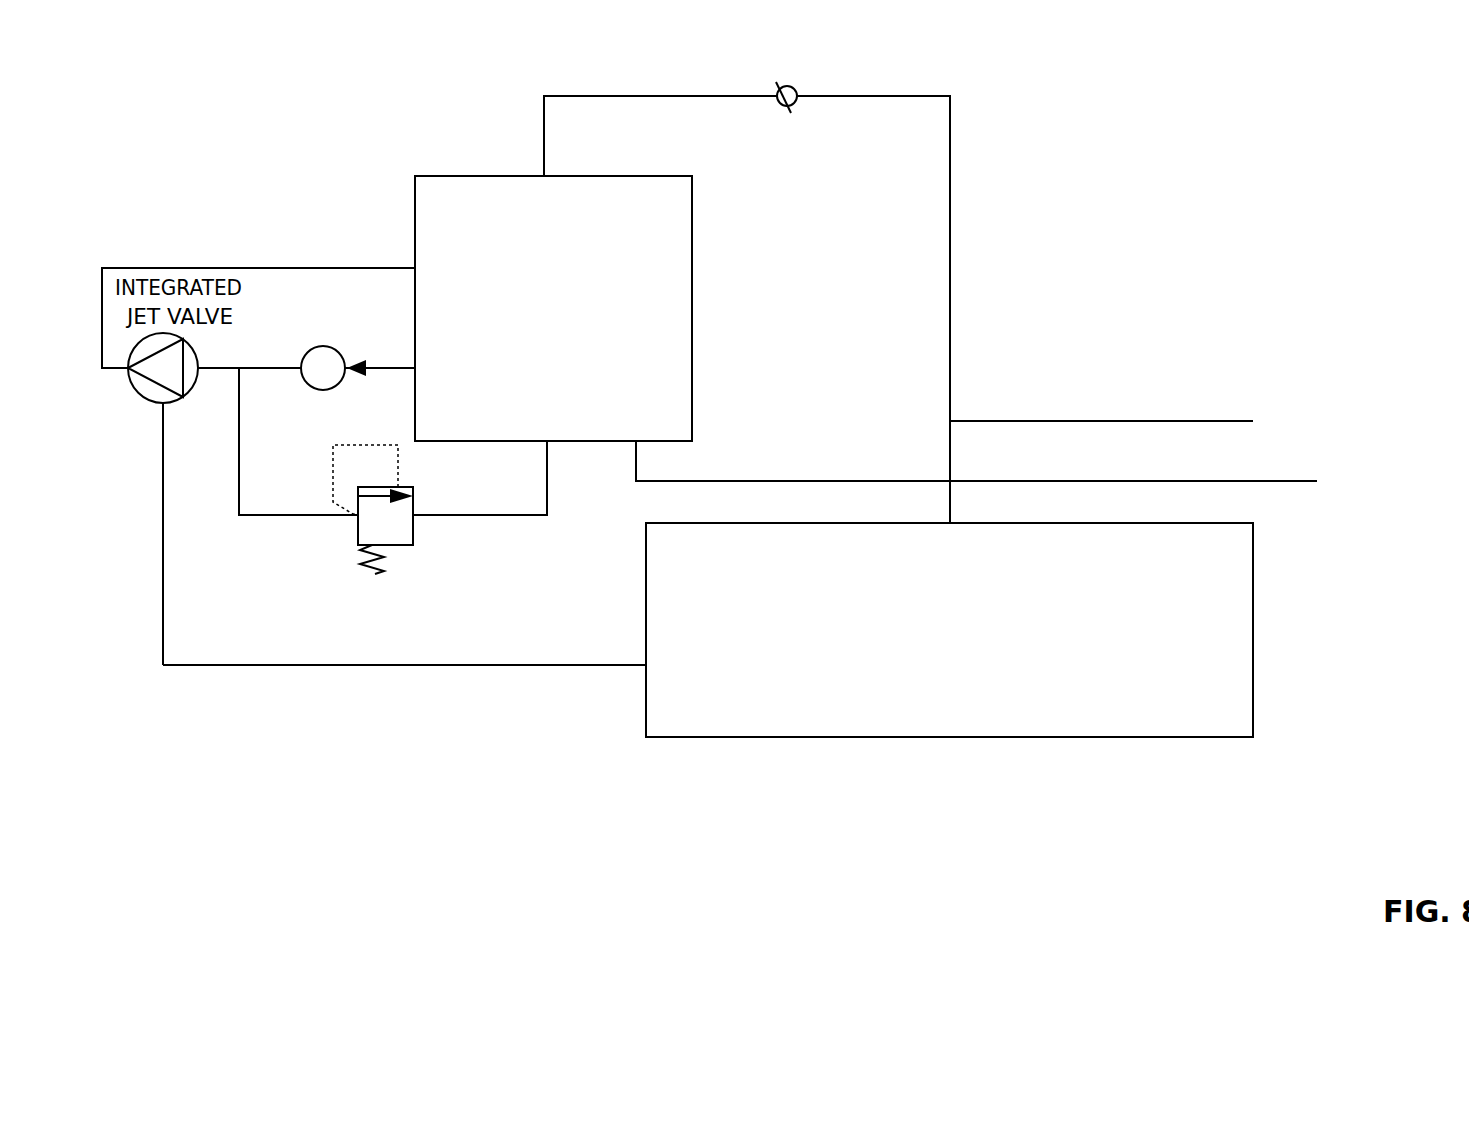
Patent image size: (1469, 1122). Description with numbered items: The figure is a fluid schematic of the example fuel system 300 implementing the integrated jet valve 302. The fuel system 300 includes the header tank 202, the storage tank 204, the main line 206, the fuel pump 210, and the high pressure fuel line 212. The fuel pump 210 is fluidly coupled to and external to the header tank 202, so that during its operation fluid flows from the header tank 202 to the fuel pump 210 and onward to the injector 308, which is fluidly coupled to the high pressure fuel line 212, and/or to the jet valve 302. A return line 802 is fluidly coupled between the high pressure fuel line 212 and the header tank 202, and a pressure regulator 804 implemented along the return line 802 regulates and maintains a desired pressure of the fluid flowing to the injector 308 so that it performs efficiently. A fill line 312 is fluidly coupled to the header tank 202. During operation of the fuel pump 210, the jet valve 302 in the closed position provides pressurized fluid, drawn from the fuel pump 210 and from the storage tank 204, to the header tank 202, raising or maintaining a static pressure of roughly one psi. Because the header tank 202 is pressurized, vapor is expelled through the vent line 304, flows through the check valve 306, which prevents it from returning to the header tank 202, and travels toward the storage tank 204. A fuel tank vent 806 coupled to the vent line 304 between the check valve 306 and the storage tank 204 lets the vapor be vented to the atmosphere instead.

The fuel system 300 is at (252, 98).
The header tank 202 is at (507, 176).
The storage tank 204 is at (643, 690).
The main line 206 is at (393, 665).
The fuel pump 210 is at (318, 396).
The high pressure fuel line 212 is at (239, 417).
The jet valve 302 is at (153, 405).
The vent line 304 is at (655, 96).
The check valve 306 is at (783, 85).
The injector 308 is at (242, 580).
The fill line 312 is at (1258, 484).
The return line 802 is at (535, 515).
The pressure regulator 804 is at (382, 573).
The fuel tank vent 806 is at (1125, 421).